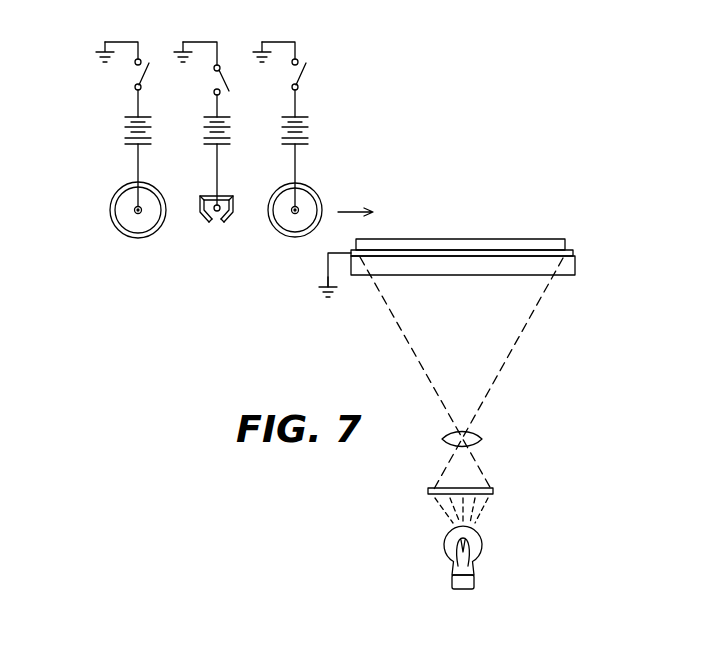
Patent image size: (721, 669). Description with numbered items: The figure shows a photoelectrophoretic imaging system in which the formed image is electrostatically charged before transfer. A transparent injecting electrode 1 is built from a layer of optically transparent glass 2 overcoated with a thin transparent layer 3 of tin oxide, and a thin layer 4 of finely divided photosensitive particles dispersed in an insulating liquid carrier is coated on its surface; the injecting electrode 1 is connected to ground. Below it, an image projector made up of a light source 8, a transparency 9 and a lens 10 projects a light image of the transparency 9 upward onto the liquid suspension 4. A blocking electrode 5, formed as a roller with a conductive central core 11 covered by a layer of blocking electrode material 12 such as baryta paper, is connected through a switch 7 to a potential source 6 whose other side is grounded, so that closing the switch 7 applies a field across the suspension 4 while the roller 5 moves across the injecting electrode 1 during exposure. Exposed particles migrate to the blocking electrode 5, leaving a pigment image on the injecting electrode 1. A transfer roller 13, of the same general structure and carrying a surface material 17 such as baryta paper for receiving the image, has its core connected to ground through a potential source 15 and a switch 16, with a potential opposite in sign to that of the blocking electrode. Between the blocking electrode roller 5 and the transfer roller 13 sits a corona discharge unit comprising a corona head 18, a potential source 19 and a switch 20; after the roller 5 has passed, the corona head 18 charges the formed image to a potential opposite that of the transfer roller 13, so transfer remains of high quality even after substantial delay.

The injecting electrode 1 is at (488, 246).
The optically transparent glass 2 is at (576, 266).
The optically transparent layer of tin oxide 3 is at (570, 250).
The layer of photosensitive particles 4 is at (533, 241).
The blocking electrode 5 is at (303, 155).
The potential source 6 is at (310, 131).
The switch 7 is at (302, 78).
The light source 8 is at (481, 546).
The transparency 9 is at (494, 490).
The lens 10 is at (483, 438).
The conductive central core 11 is at (141, 212).
The blocking electrode material 12 is at (290, 237).
The transfer roller 13 is at (101, 140).
The potential source 15 is at (117, 131).
The switch 16 is at (133, 78).
The image receiving material 17 is at (114, 196).
The corona head 18 is at (200, 198).
The potential source 19 is at (232, 131).
The switch 20 is at (224, 78).